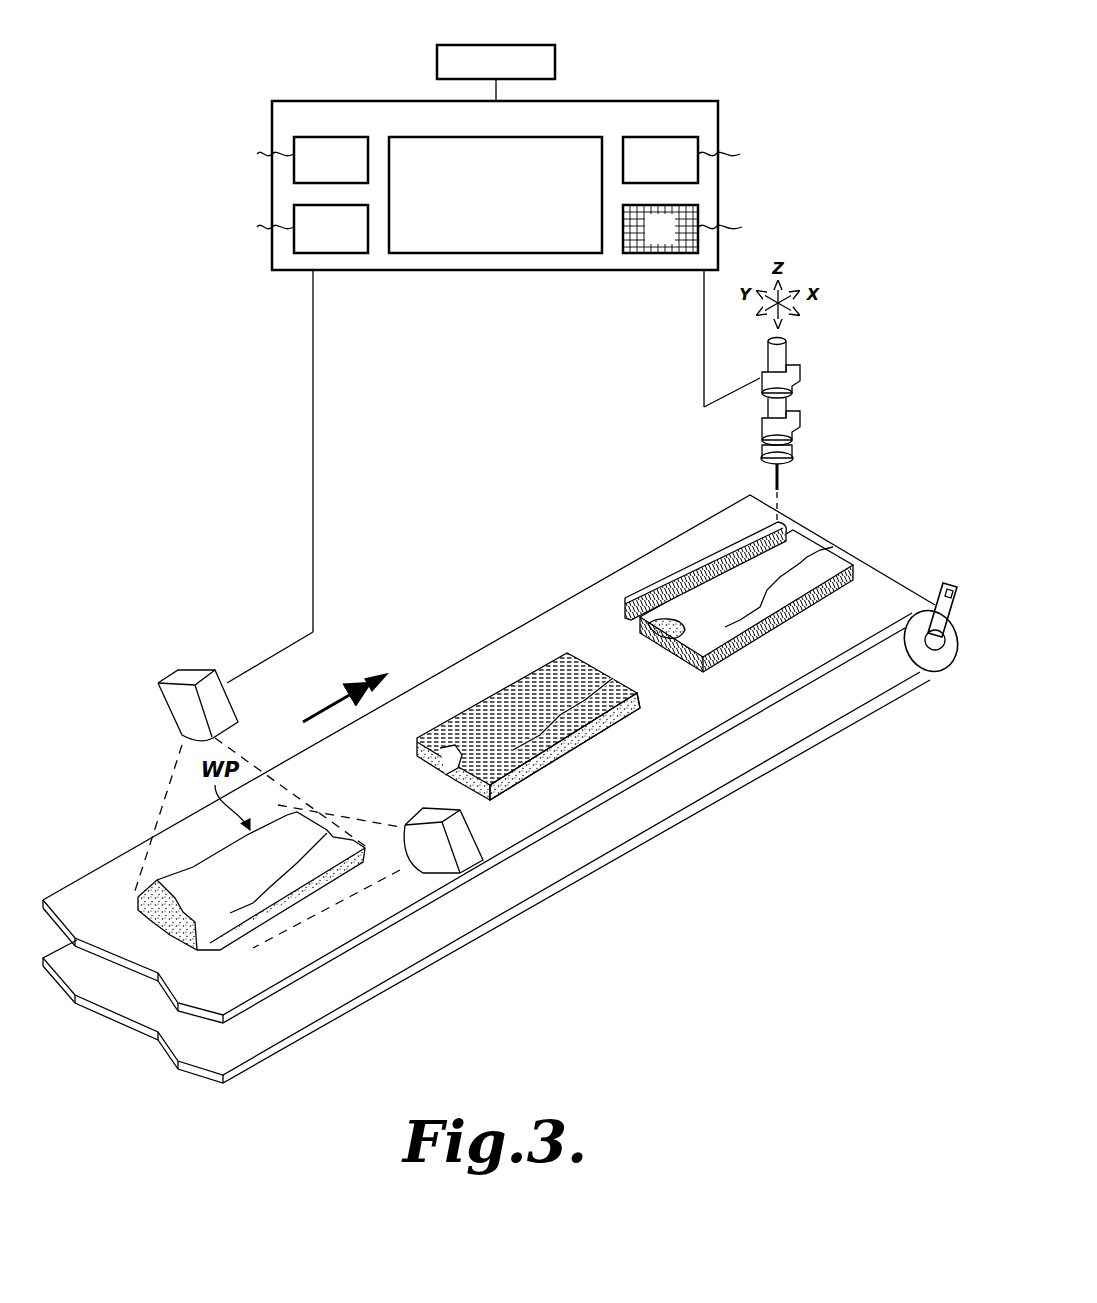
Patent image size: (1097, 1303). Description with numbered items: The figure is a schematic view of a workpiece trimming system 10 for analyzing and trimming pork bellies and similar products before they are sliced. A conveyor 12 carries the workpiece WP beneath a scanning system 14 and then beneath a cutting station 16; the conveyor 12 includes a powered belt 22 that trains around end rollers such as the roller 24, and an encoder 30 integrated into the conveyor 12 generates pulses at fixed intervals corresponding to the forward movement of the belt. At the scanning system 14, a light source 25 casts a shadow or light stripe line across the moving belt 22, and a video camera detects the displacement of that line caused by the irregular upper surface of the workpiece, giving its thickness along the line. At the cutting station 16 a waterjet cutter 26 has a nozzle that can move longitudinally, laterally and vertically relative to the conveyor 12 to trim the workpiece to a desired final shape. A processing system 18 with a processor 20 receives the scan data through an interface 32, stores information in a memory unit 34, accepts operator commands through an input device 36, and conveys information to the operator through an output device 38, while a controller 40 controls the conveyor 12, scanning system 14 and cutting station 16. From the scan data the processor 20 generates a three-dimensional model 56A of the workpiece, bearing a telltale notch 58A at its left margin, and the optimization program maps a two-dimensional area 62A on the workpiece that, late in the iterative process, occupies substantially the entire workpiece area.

The system 10 is at (124, 363).
The conveyor 12 is at (746, 803).
The scanning system 14 is at (145, 688).
The cutting station 16 is at (824, 405).
The processing system 18 is at (718, 82).
The processor 20 is at (618, 101).
The belt 22 is at (368, 993).
The roller 24 is at (917, 668).
The light source 25 is at (196, 676).
The waterjet cutter 26 is at (762, 442).
The encoder 30 is at (943, 581).
The interface 32 is at (320, 241).
The memory unit 34 is at (320, 173).
The input device 36 is at (649, 241).
The output device 38 is at (649, 173).
The controller 40 is at (484, 231).
The three-dimensional model 56A is at (597, 735).
The telltale notch 58A is at (458, 756).
The two-dimensional area 62A is at (510, 687).